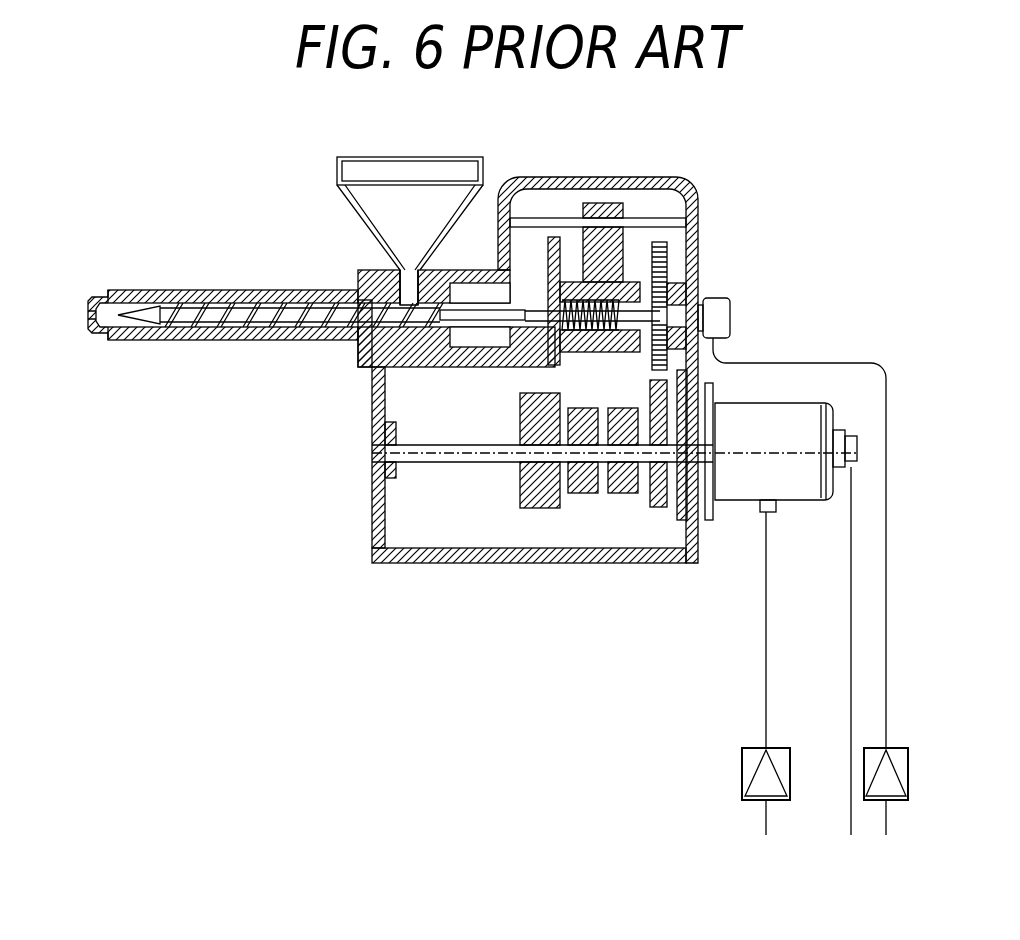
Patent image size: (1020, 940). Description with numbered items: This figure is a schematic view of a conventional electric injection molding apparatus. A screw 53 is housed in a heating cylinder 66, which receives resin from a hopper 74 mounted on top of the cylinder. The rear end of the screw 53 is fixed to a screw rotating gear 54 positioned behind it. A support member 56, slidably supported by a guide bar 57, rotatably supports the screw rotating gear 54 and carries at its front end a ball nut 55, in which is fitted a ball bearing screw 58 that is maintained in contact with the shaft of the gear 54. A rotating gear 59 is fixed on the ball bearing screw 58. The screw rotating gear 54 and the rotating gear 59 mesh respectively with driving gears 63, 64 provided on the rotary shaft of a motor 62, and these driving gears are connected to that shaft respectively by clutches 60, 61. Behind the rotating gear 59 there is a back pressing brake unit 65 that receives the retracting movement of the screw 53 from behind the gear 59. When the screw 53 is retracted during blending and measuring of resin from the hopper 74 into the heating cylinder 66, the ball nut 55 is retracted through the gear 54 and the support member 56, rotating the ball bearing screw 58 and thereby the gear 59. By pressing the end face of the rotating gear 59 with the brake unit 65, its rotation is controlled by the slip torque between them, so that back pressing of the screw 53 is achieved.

The screw 53 is at (334, 342).
The screw rotating gear 54 is at (553, 238).
The ball nut 55 is at (625, 292).
The support member 56 is at (601, 240).
The guide bar 57 is at (690, 190).
The ball bearing screw 58 is at (668, 290).
The rotating gear 59 is at (661, 256).
The clutch 60 is at (584, 495).
The clutch 61 is at (622, 495).
The motor 62 is at (770, 410).
The driving gear 63 is at (538, 510).
The driving gear 64 is at (657, 508).
The back pressing brake unit 65 is at (720, 310).
The heating cylinder 66 is at (226, 342).
The hopper 74 is at (481, 157).